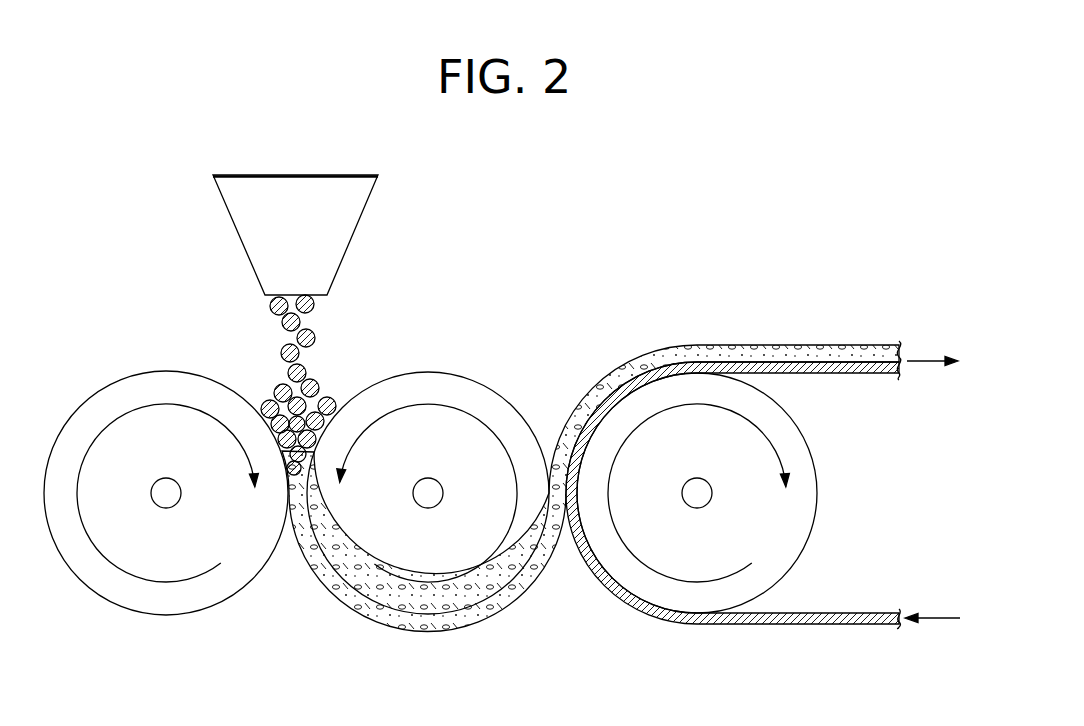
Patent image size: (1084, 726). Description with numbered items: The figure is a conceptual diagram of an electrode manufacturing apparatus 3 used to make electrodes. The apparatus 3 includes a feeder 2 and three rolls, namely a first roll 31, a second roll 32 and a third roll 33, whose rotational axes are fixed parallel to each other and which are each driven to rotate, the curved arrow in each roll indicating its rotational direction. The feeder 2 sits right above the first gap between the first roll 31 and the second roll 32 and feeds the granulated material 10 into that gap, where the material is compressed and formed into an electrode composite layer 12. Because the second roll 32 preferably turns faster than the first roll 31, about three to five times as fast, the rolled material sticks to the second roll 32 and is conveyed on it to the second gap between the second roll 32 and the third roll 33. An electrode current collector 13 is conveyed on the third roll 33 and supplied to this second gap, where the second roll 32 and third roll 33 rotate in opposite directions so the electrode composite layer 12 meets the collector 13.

The feeder 2 is at (300, 187).
The electrode manufacturing apparatus 3 is at (120, 281).
The granulated material 10 is at (332, 374).
The electrode composite layer 12 is at (813, 352).
The electrode current collector 13 is at (842, 368).
The first roll 31 is at (166, 387).
The second roll 32 is at (428, 387).
The third roll 33 is at (798, 495).